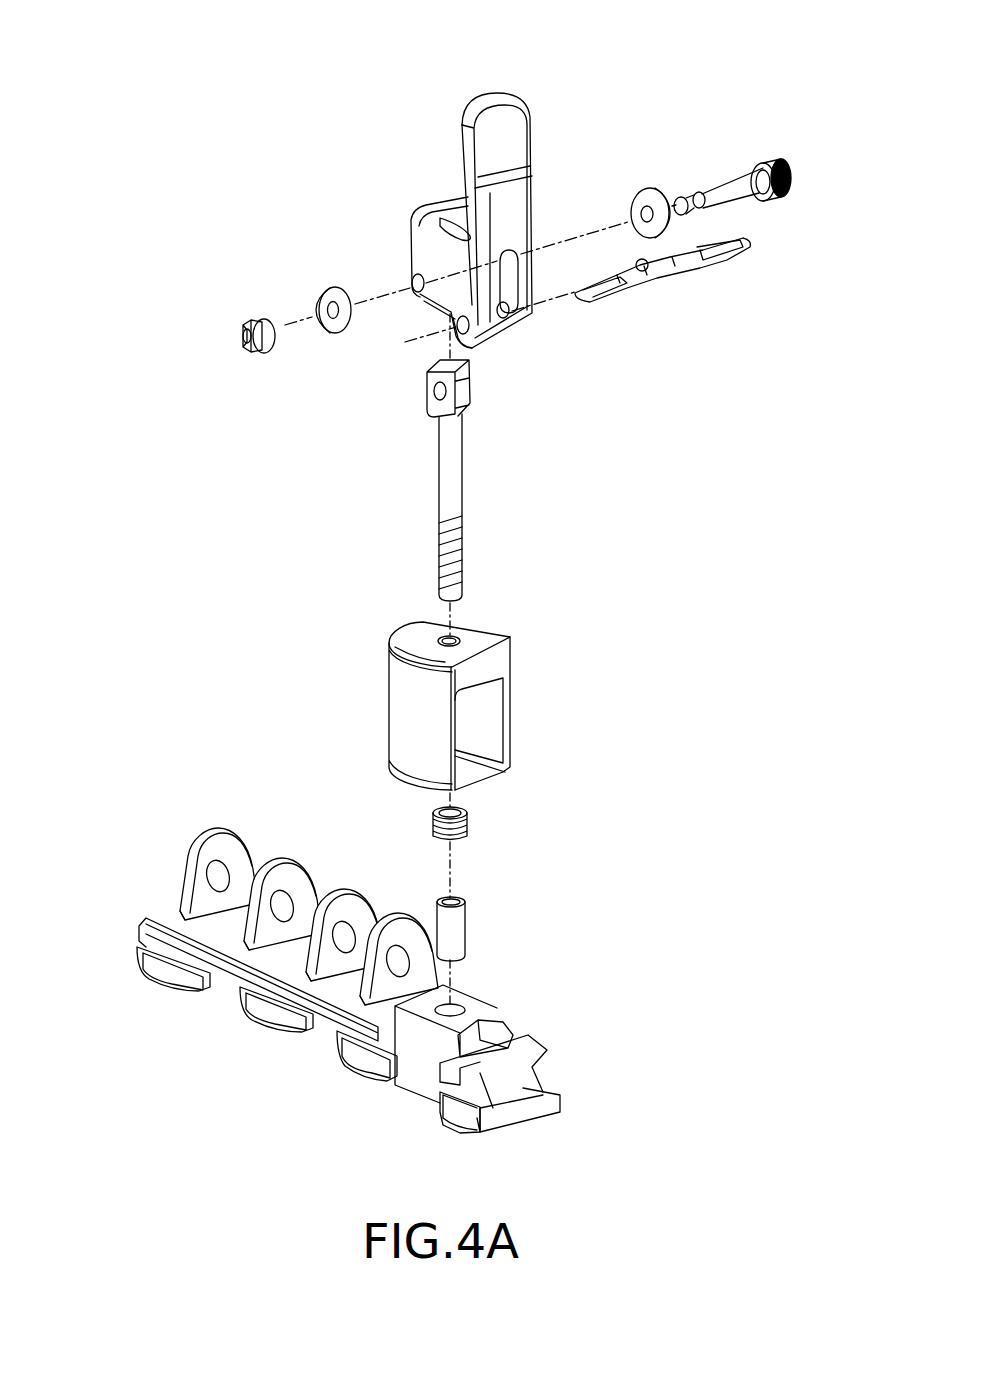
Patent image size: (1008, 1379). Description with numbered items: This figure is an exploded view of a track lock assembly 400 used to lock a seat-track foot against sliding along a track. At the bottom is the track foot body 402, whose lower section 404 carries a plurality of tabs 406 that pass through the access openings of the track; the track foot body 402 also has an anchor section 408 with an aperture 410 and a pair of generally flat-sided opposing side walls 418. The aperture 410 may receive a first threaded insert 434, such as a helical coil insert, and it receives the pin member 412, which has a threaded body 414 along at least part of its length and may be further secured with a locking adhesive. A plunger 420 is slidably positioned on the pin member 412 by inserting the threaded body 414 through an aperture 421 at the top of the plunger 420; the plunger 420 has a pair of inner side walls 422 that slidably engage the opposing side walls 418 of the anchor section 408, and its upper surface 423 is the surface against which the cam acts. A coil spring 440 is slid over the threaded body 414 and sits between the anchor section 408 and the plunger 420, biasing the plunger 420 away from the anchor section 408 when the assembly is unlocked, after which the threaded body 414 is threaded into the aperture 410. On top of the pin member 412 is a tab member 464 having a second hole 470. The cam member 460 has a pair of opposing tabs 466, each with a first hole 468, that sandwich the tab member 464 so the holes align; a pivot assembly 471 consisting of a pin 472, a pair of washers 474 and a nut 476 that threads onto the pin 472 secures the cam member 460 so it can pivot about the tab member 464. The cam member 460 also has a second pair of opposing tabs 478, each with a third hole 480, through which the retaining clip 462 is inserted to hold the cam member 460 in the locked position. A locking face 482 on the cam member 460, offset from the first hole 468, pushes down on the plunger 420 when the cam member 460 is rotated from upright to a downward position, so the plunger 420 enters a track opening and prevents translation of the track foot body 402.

The track lock assembly 400 is at (187, 60).
The track foot body 402 is at (170, 884).
The lower section 404 is at (217, 993).
The tabs 406 is at (167, 996).
The anchor section 408 is at (498, 1022).
The aperture 410 is at (466, 1010).
The pin member 412 is at (462, 470).
The threaded body 414 is at (460, 557).
The opposing side walls 418 is at (418, 1075).
The plunger 420 is at (400, 709).
The aperture 421 is at (470, 642).
The inner side walls 422 is at (490, 715).
The upper surface 423 is at (402, 643).
The first threaded insert 434 is at (462, 928).
The coil spring 440 is at (470, 828).
The cam member 460 is at (410, 226).
The retaining clip 462 is at (762, 244).
The tab member 464 is at (470, 386).
The opposing tabs 466 is at (411, 262).
The first hole 468 is at (418, 294).
The second hole 470 is at (440, 394).
The pivot assembly 471 is at (669, 155).
The pin 472 is at (727, 183).
The washers 474 is at (645, 193).
The nut 476 is at (262, 320).
The second pair of opposing tabs 478 is at (540, 314).
The third hole 480 is at (523, 328).
The locking face 482 is at (520, 233).